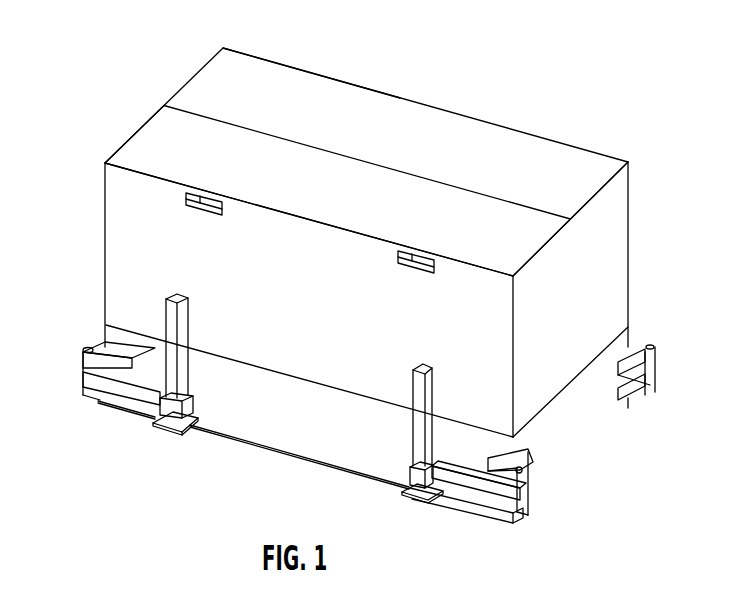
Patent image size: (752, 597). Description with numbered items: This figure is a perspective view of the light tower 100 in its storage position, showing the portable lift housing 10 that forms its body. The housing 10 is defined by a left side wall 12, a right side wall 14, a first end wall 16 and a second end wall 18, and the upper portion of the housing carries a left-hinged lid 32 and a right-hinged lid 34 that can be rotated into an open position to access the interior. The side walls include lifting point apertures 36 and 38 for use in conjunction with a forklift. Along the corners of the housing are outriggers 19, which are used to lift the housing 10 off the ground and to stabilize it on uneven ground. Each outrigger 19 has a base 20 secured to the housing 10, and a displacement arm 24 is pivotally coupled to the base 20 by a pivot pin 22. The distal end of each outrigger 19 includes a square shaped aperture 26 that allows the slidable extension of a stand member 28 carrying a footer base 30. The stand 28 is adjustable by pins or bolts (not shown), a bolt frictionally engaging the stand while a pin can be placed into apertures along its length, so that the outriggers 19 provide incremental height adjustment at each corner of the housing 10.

The storage system 100 is at (545, 92).
The portable lift housing 10 is at (618, 160).
The left side wall 12 is at (250, 417).
The right side wall 14 is at (403, 97).
The first end wall 16 is at (152, 118).
The second end wall 18 is at (613, 293).
The outrigger 19 is at (155, 420).
The base 20 is at (555, 478).
The pivot pin 22 is at (527, 467).
The lower arm 24 is at (477, 490).
The square shaped aperture 26 is at (405, 470).
The stand member 28 is at (430, 404).
The footer base 30 is at (427, 498).
The left-hinged lid 32 is at (315, 194).
The right-hinged lid 34 is at (283, 98).
The lifting point aperture 36 is at (205, 208).
The lifting point aperture 38 is at (412, 267).